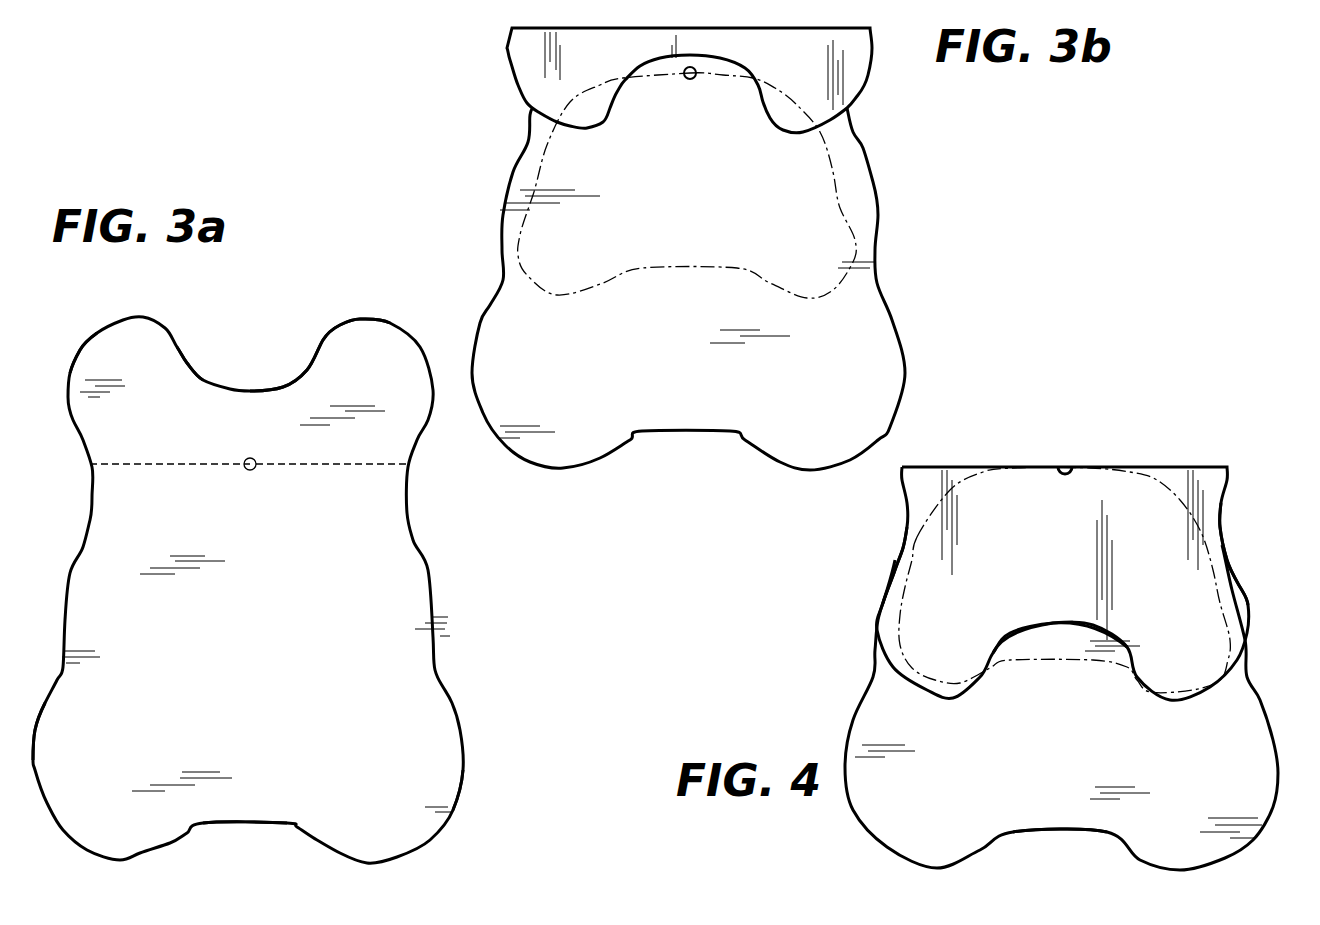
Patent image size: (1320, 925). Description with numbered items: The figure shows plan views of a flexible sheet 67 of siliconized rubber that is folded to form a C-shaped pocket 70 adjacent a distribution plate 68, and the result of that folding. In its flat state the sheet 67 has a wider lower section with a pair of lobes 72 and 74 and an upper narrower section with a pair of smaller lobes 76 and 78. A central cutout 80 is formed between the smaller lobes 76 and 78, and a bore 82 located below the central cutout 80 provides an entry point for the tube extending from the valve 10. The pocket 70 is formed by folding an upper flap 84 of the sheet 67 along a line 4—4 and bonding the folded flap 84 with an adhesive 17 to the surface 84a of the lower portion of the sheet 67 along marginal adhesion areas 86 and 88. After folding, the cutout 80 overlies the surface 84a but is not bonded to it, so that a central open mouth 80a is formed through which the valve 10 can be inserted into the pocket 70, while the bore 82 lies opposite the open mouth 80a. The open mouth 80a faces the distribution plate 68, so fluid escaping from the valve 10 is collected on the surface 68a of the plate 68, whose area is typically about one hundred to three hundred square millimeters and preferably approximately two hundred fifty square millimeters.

In FIG. 3a, the fold line 4 is at (345, 467).
In FIG. 3b, the valve 10 is at (830, 187).
In FIG. 4, the valve 10 is at (908, 620).
In FIG. 4, the adhesive 17 is at (1253, 553).
In FIG. 3a, the flexible sheet 67 is at (365, 360).
In FIG. 3a, the distribution plate 68 is at (300, 755).
In FIG. 4, the surface of the distribution plate 68a is at (1008, 753).
In FIG. 4, the C-shaped pocket 70 is at (1135, 510).
In FIG. 3a, the lobe 72 is at (75, 835).
In FIG. 3a, the lobe 74 is at (436, 850).
In FIG. 3a, the smaller lobe 76 is at (68, 380).
In FIG. 3b, the smaller lobe 76 is at (842, 412).
In FIG. 3a, the smaller lobe 78 is at (407, 343).
In FIG. 3a, the central cutout 80 is at (260, 380).
In FIG. 4, the central cutout 80 is at (1061, 707).
In FIG. 4, the central open mouth 80a is at (1053, 650).
In FIG. 4, the bore 82 is at (1065, 463).
In FIG. 3a, the upper flap 84 is at (213, 415).
In FIG. 3a, the surface of the lower portion of the sheet 84a is at (250, 688).
In FIG. 4, the marginal adhesion area 86 is at (885, 520).
In FIG. 4, the marginal adhesion area 88 is at (1242, 500).